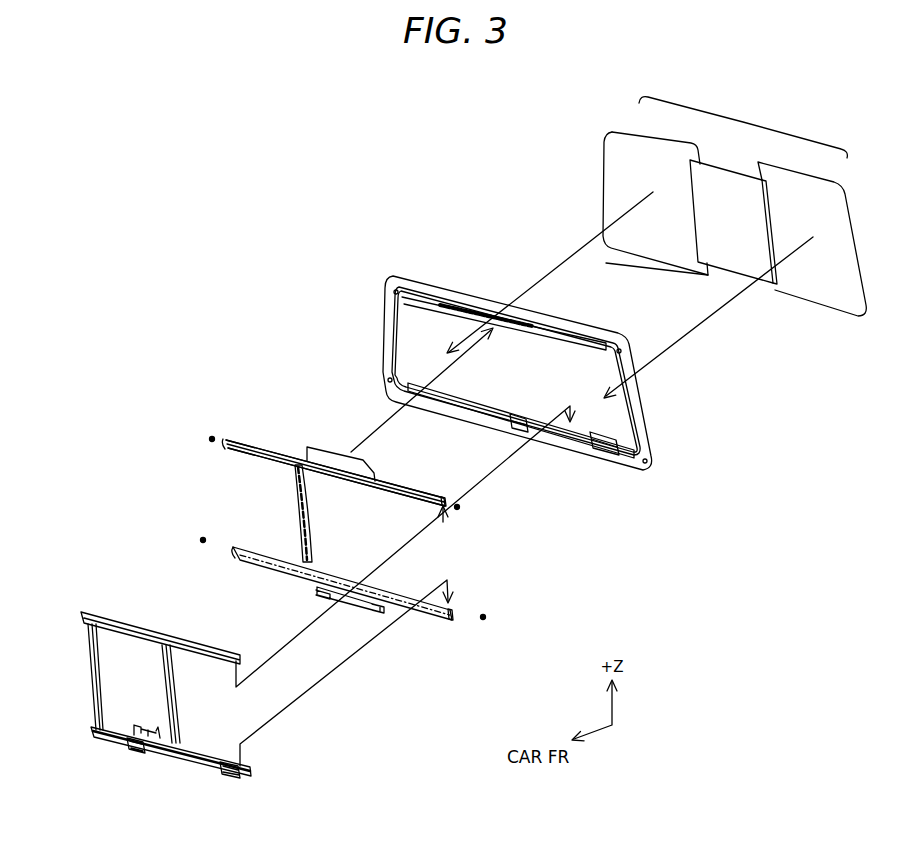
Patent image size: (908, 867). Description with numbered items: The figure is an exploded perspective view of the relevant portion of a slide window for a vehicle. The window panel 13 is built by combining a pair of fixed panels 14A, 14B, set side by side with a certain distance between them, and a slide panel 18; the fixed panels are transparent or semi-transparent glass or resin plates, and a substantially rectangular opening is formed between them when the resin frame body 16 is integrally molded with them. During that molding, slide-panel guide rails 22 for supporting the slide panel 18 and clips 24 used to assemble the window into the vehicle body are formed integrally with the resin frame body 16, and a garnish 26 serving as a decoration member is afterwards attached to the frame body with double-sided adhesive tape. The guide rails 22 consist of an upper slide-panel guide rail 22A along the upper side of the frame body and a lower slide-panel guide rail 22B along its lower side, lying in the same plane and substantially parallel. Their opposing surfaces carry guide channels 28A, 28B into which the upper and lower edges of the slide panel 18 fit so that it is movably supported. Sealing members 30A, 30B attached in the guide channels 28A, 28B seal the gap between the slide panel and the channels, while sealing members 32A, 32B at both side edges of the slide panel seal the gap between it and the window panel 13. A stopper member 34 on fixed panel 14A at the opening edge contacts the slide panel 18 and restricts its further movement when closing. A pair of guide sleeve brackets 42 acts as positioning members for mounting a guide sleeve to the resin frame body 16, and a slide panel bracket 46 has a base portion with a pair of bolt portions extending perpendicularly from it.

The window panel 13 is at (743, 122).
The fixed panel 14A is at (648, 146).
The fixed panel 14B is at (826, 196).
The slide panel 18 is at (735, 183).
The resin frame body 16 is at (417, 284).
The slide-panel guide rails 22 is at (407, 471).
The upper slide-panel guide rail 22A is at (228, 439).
The lower slide-panel guide rail 22B is at (242, 557).
The clips 24 is at (211, 439).
The garnish 26 is at (326, 453).
The guide channel 28A is at (443, 498).
The guide channel 28B is at (460, 614).
The stopper member 34 is at (296, 512).
The sealing member 30A is at (108, 622).
The sealing member 30B is at (93, 738).
The sealing member 32A is at (89, 671).
The sealing member 32B is at (181, 687).
The guide sleeve brackets 42 is at (137, 755).
The slide panel bracket 46 is at (146, 726).